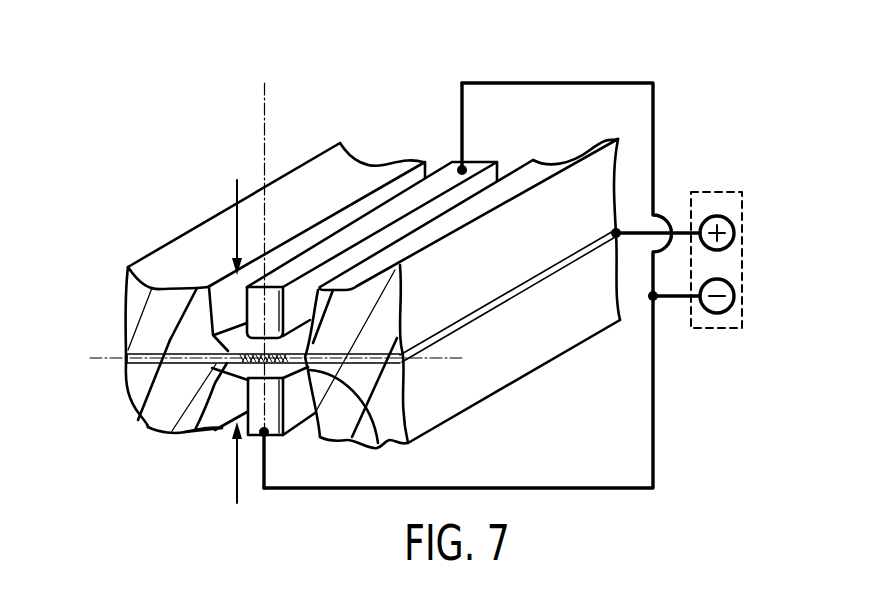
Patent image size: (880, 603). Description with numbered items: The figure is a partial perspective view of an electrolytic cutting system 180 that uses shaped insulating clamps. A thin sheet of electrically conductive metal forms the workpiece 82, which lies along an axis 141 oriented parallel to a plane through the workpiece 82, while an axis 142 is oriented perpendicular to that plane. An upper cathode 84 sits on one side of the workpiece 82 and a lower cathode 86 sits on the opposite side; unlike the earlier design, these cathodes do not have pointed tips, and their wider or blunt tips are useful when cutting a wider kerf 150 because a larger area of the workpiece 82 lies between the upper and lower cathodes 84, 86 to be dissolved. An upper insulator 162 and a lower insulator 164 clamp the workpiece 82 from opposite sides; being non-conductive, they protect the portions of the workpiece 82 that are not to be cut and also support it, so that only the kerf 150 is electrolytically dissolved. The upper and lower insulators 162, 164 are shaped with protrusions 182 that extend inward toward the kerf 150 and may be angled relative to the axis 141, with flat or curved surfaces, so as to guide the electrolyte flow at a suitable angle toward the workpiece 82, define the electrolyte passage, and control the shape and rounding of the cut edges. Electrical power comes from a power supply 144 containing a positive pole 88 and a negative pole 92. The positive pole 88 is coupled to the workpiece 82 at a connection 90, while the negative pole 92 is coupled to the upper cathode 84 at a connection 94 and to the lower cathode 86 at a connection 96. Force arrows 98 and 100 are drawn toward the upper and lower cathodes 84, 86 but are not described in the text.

The workpiece 82 is at (515, 292).
The upper cathode 84 is at (442, 178).
The lower cathode 86 is at (249, 437).
The positive pole 88 is at (723, 215).
The connection 90 is at (620, 229).
The negative pole 92 is at (722, 314).
The connection 94 is at (465, 168).
The connection 96 is at (270, 438).
The clamping force 98 is at (236, 192).
The clamping force 100 is at (235, 469).
The axis 141 is at (93, 362).
The axis 142 is at (264, 112).
The power supply 144 is at (690, 193).
The kerf 150 is at (193, 431).
The upper insulator 162 is at (137, 290).
The lower insulator 164 is at (135, 428).
The electrolytic cutting system 180 is at (578, 68).
The protrusions 182 is at (297, 368).